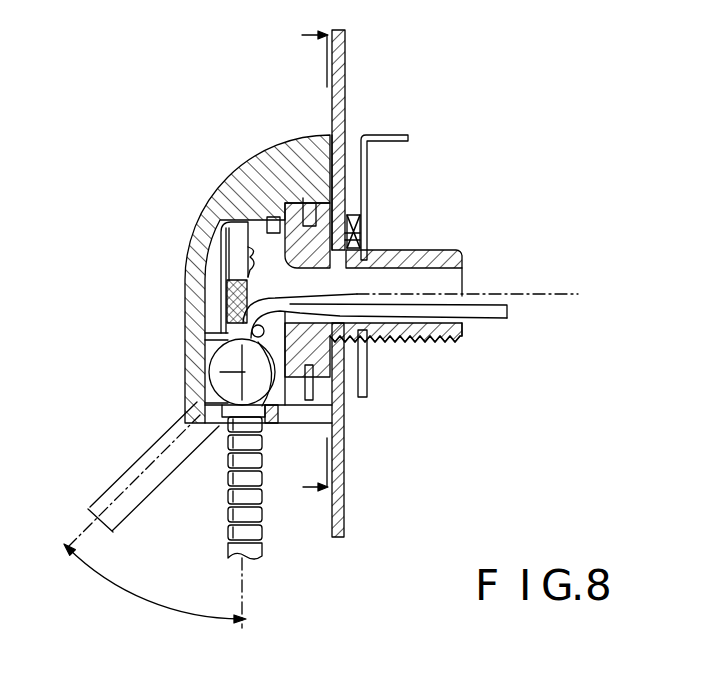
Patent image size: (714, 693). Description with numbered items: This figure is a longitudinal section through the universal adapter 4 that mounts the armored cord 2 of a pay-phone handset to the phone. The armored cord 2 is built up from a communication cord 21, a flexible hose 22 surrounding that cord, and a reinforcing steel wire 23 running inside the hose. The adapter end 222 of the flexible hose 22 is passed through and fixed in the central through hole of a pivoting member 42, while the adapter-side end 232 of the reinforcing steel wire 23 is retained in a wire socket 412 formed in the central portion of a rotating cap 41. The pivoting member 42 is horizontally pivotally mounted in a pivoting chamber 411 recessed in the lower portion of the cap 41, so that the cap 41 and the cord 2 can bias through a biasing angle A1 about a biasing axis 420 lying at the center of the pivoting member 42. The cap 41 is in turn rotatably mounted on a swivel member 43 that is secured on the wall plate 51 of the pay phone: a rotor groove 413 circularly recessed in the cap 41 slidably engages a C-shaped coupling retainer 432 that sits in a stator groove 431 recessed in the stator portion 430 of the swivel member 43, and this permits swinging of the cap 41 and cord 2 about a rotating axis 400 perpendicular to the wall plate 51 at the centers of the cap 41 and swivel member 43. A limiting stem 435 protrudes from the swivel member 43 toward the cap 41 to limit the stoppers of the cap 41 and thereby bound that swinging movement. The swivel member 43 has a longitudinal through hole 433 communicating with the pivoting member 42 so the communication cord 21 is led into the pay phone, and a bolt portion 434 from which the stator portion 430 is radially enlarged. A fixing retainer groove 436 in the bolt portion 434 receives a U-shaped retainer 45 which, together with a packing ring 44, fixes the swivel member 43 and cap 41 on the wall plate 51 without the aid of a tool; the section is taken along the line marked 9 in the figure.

The armored cord 2 is at (220, 515).
The universal adapter 4 is at (219, 255).
The section line 9 is at (304, 254).
The communication cord 21 is at (509, 316).
The flexible hose 22 is at (227, 477).
The reinforcing steel wire 23 is at (235, 303).
The rotating cap 41 is at (203, 203).
The pivoting member 42 is at (212, 372).
The swivel member 43 is at (426, 347).
The packing ring 44 is at (344, 382).
The U-shaped retainer 45 is at (404, 133).
The wall plate 51 is at (342, 52).
The adapter end 222 is at (270, 539).
The adapter-side end 232 is at (215, 245).
The rotating axis 400 is at (547, 295).
The pivoting chamber 411 is at (217, 348).
The wire socket 412 is at (217, 268).
The rotor groove 413 is at (331, 197).
The biasing axis 420 is at (205, 388).
The stator portion 430 is at (347, 237).
The stator groove 431 is at (352, 217).
The C-shaped coupling retainer 432 is at (347, 190).
The longitudinal through hole 433 is at (461, 326).
The bolt portion 434 is at (395, 332).
The limiting stem 435 is at (271, 217).
The fixing retainer groove 436 is at (470, 250).
The biasing angle A1 is at (170, 592).